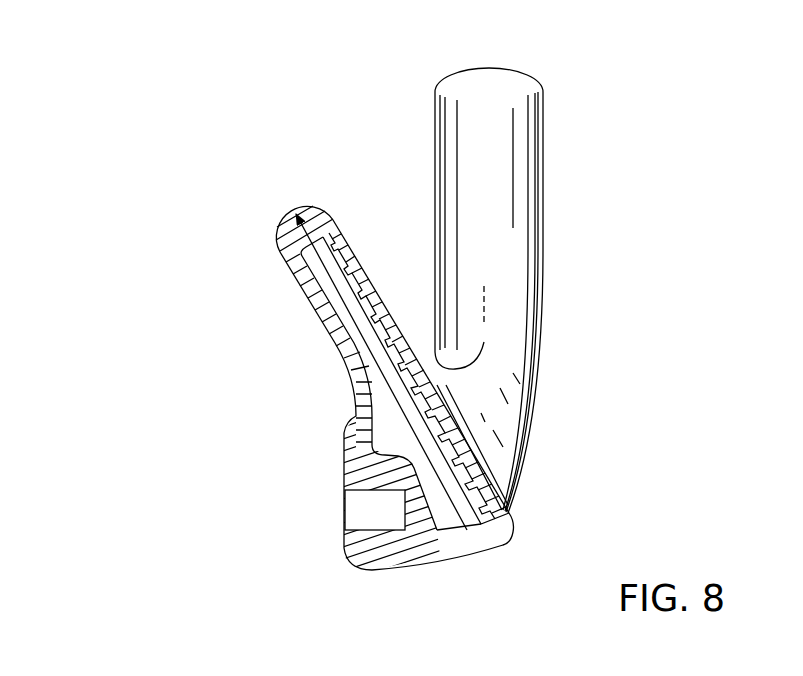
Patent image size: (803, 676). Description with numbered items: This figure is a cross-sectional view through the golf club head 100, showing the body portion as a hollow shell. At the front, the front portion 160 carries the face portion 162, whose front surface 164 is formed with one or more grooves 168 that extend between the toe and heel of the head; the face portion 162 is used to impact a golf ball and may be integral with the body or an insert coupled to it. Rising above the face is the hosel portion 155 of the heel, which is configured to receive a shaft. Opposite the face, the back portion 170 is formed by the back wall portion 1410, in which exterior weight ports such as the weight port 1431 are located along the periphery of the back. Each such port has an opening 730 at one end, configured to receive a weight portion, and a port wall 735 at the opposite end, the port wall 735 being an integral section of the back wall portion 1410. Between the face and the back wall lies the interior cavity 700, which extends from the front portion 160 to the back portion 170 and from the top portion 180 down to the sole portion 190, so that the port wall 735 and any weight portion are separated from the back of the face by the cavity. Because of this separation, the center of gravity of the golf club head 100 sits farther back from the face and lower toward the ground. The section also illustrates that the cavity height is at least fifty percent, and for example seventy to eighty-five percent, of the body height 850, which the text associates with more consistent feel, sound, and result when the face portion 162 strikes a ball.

The golf club head 100 is at (150, 105).
The hosel portion 155 is at (521, 136).
The front portion 160 is at (580, 380).
The face portion 162 is at (338, 243).
The front surface 164 is at (393, 315).
The grooves 168 is at (487, 467).
The back portion 170 is at (283, 381).
The top portion 180 is at (286, 193).
The sole portion 190 is at (498, 571).
The interior cavity 700 is at (384, 443).
The opening 730 is at (342, 505).
The port wall 735 is at (423, 514).
The body height 850 is at (340, 292).
The back wall portion 1410 is at (300, 262).
The weight port 1431 is at (381, 524).